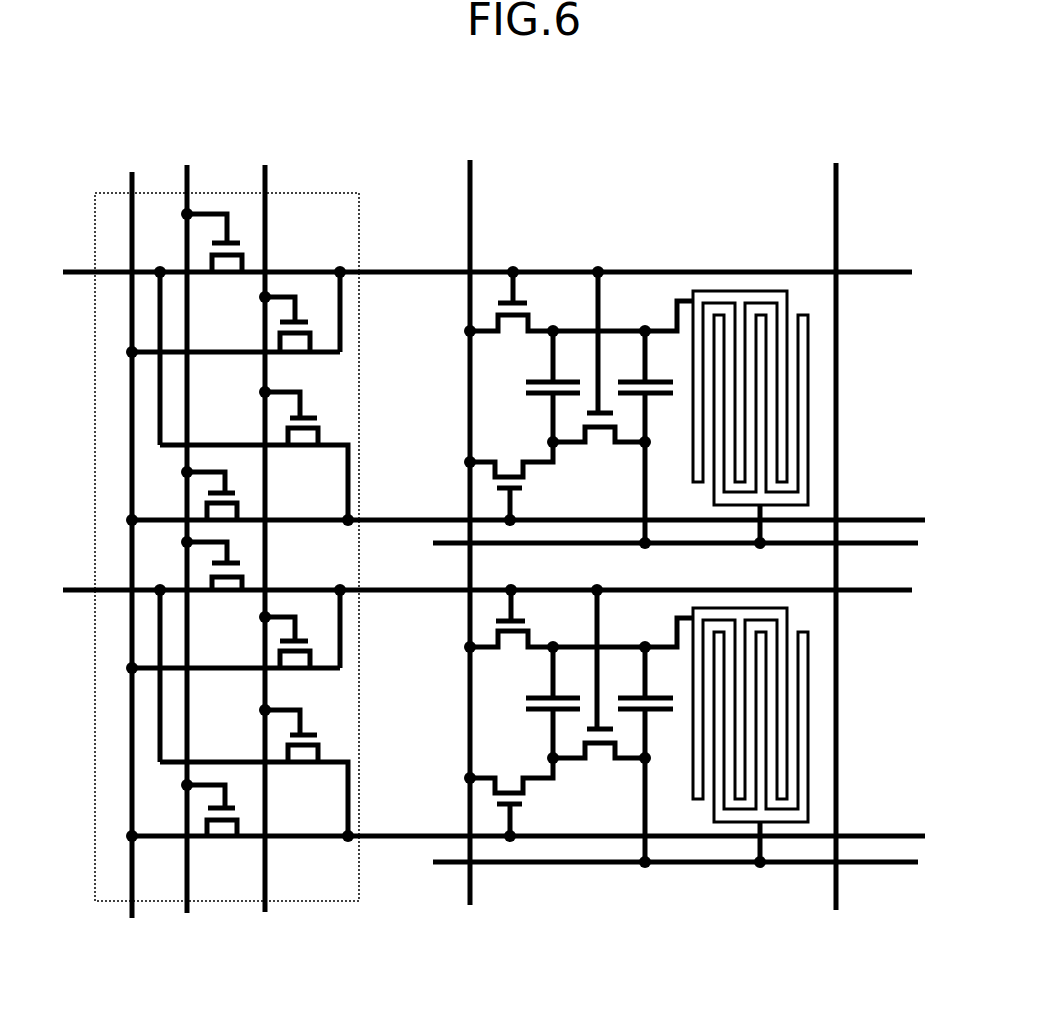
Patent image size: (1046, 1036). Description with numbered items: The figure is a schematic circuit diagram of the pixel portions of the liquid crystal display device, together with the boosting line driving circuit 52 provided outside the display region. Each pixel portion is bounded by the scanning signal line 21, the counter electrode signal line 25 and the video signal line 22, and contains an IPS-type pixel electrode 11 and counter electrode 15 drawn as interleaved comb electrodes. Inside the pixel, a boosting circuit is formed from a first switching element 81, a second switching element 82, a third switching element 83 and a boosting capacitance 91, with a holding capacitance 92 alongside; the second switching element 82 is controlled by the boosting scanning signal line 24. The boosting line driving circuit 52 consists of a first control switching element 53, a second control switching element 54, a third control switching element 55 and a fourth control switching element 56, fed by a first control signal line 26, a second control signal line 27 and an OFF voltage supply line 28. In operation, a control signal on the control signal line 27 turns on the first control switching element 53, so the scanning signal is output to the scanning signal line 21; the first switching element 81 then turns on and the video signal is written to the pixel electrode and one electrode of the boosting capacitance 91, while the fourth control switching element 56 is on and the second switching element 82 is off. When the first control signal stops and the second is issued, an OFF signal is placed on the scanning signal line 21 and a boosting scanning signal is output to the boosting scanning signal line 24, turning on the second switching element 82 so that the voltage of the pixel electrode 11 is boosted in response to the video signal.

The pixel electrode 11 is at (745, 288).
The counter electrode 15 is at (811, 313).
The scanning signal line 21 is at (415, 271).
The video signal line 22 is at (838, 207).
The boosting scanning signal line 24 is at (420, 519).
The counter electrode signal line 25 is at (700, 866).
The first control signal line 26 is at (266, 175).
The second control signal line 27 is at (187, 182).
The OFF voltage supply line 28 is at (132, 200).
The boosting line driving circuit 52 is at (290, 902).
The first control switching element 53 is at (235, 238).
The second control switching element 54 is at (288, 320).
The third control switching element 55 is at (318, 418).
The fourth control switching element 56 is at (237, 498).
The first switching element 81 is at (512, 270).
The second switching element 82 is at (522, 486).
The third switching element 83 is at (607, 402).
The boosting capacitance 91 is at (568, 372).
The holding capacitance 92 is at (648, 376).